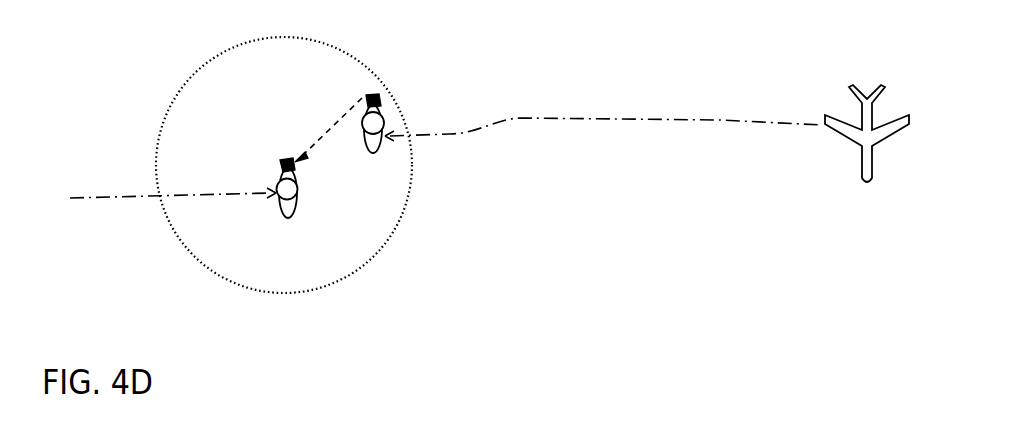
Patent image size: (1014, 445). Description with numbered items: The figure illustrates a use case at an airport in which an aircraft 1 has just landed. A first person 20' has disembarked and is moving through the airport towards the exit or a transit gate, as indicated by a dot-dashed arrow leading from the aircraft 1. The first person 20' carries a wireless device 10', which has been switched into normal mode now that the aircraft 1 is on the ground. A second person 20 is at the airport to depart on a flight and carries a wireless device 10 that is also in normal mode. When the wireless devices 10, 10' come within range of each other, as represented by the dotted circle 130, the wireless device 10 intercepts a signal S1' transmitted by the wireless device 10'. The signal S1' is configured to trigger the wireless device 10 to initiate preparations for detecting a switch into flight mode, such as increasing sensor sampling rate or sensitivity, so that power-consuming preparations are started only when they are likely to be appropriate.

The aircraft 1 is at (868, 158).
The wireless device 10 is at (241, 153).
The wireless device 10' is at (415, 91).
The second person 20 is at (261, 209).
The first person 20' is at (381, 158).
The dotted circle 130 is at (287, 37).
The signal S1' is at (328, 130).